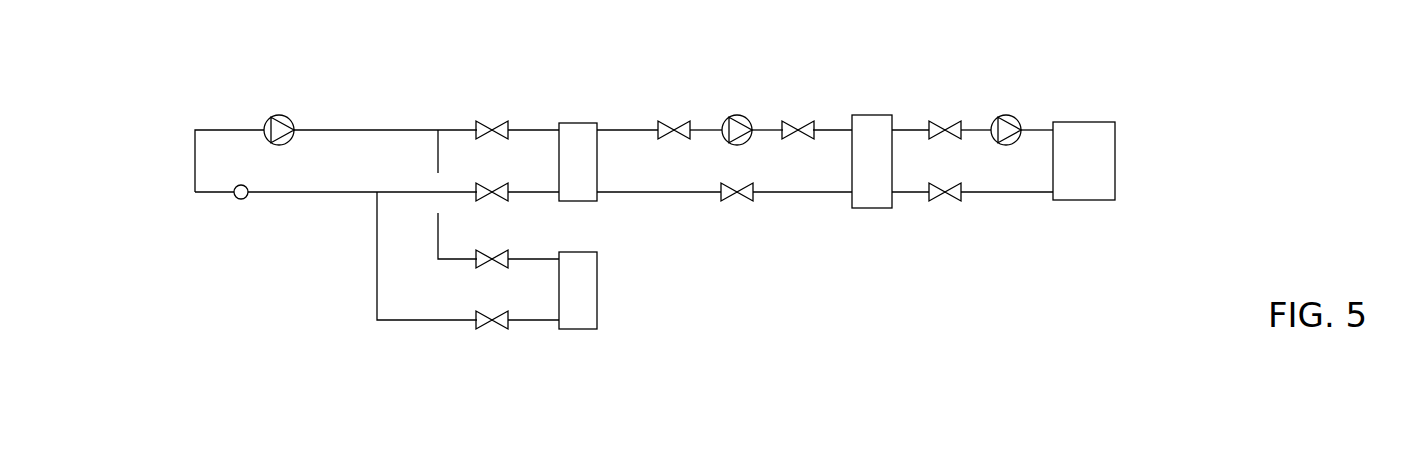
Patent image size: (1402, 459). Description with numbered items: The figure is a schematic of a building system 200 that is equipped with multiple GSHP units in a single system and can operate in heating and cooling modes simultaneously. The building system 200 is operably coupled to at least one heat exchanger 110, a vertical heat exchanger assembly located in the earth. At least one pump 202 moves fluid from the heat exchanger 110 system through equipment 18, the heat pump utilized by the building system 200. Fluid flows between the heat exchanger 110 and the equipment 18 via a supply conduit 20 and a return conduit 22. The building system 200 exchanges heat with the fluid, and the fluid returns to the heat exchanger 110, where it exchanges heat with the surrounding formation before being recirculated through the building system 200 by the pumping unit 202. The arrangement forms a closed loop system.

The building system 200 is at (128, 370).
The return conduit 22 is at (345, 130).
The supply conduit 20 is at (345, 197).
The pump 202 is at (279, 115).
The heat exchanger 110 is at (241, 199).
The heat pump 18 is at (577, 132).